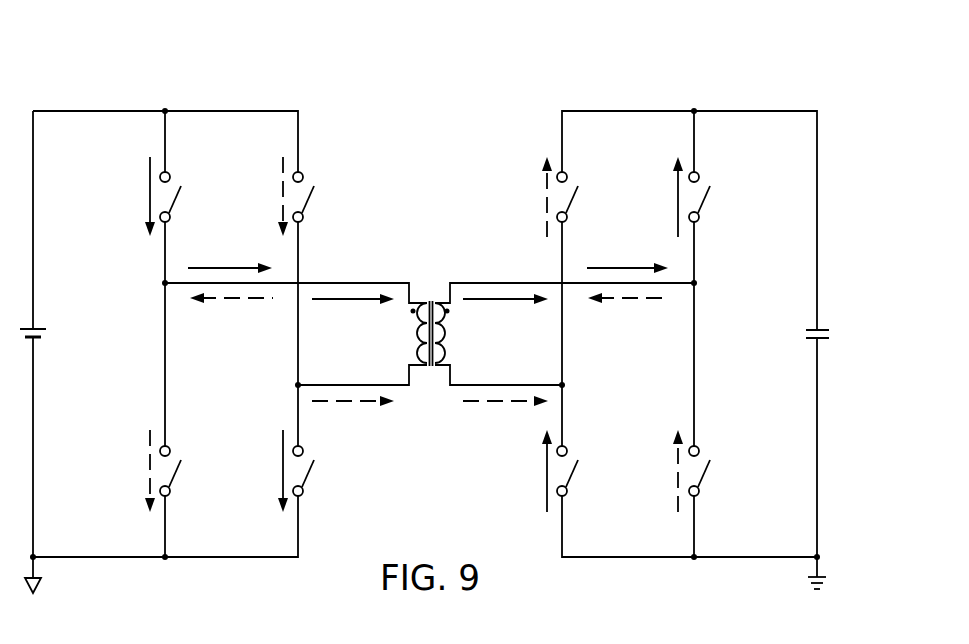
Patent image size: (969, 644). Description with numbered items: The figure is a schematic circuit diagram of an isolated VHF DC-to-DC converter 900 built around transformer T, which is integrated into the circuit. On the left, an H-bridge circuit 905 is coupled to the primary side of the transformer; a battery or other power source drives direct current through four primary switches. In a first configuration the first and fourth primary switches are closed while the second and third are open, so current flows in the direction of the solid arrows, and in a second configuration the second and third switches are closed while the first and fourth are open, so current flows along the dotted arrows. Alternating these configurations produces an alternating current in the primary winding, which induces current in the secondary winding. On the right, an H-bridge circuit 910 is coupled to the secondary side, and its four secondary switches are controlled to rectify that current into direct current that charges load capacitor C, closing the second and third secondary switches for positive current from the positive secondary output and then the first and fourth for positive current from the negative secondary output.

The isolated VHF DC-to-DC converter 900 is at (374, 73).
The H-bridge circuit 905 is at (100, 111).
The H-bridge circuit 910 is at (630, 111).